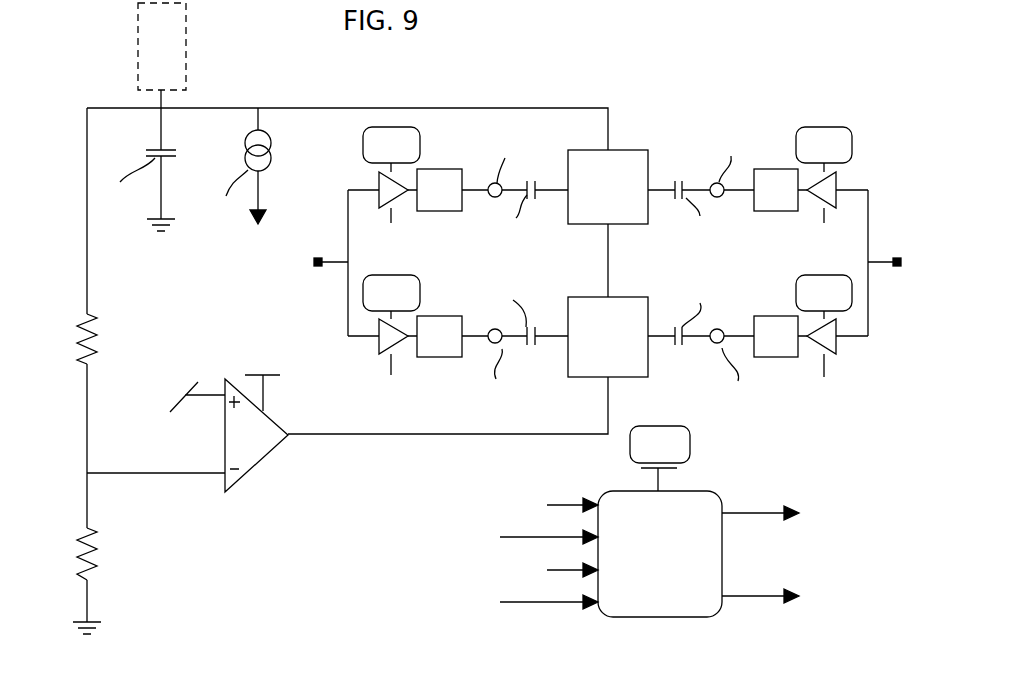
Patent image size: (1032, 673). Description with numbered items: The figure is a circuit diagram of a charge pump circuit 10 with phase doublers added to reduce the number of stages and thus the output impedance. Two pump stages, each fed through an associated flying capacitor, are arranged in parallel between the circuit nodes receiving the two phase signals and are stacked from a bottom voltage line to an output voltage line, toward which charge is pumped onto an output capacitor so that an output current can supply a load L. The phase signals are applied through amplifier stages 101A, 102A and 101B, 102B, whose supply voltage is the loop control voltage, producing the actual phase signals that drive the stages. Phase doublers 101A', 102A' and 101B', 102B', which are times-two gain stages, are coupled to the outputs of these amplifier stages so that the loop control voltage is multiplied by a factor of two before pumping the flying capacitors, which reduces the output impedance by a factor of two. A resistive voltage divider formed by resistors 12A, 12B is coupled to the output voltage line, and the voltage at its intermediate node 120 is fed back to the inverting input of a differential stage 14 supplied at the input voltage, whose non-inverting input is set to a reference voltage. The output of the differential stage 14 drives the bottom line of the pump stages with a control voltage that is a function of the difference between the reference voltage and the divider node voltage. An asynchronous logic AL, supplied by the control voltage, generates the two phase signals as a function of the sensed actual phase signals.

The charge pump circuit 10 is at (497, 91).
The amplifier stage 102B is at (359, 175).
The phase doubler 102B' is at (448, 216).
The amplifier stage 102A is at (855, 175).
The phase doubler 102A' is at (765, 218).
The amplifier stage 101B is at (363, 331).
The phase doubler 101B' is at (448, 362).
The amplifier stage 101A is at (854, 333).
The phase doubler 101A' is at (781, 368).
The resistor 12A is at (60, 339).
The resistor 12B is at (60, 545).
The intermediate node 120 is at (91, 476).
The differential stage 14 is at (263, 450).
The load L is at (148, 42).
The asynchronous logic AL is at (640, 597).